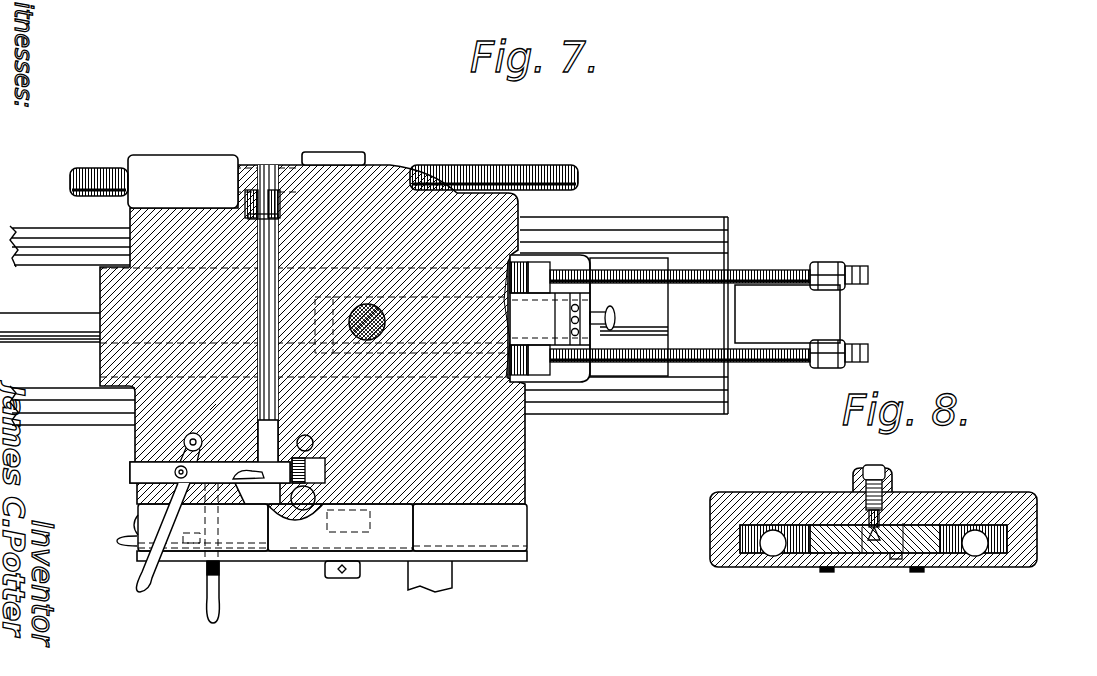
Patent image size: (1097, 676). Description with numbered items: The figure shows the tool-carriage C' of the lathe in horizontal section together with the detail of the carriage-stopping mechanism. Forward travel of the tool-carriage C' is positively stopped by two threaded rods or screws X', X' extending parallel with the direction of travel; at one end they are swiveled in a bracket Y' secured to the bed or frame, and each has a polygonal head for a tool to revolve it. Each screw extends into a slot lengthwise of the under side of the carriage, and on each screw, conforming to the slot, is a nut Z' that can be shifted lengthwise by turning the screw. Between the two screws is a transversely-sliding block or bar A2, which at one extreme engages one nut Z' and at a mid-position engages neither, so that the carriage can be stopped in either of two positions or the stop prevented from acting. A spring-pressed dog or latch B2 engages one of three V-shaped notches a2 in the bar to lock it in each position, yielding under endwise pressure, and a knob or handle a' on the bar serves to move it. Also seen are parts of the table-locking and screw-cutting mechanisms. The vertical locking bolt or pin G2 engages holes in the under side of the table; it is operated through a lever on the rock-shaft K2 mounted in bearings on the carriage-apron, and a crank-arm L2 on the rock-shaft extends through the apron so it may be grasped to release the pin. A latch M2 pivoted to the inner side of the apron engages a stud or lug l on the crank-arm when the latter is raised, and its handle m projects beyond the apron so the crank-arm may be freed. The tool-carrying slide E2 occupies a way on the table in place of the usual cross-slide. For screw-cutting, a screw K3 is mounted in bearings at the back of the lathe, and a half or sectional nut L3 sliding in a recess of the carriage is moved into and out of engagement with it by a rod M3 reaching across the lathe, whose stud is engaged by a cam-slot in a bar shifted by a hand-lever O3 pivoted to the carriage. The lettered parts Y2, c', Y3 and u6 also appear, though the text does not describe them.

In FIG. 7, the tool-carriage C' is at (312, 334).
In FIG. 7, the screw K3 is at (455, 165).
In FIG. 7, the half or sectional nut L3 is at (268, 170).
In FIG. 7, the shaft Y2 is at (33, 318).
In FIG. 7, the passage c' is at (325, 352).
In FIG. 7, the nut Z' is at (500, 322).
In FIG. 8, the nut Z' is at (875, 517).
In FIG. 7, the spring-pressed dog or latch B2 is at (600, 342).
In FIG. 8, the spring-pressed dog or latch B2 is at (884, 468).
In FIG. 7, the notches a2 is at (571, 331).
In FIG. 8, the notches a2 is at (862, 527).
In FIG. 7, the knob or handle a' is at (609, 307).
In FIG. 8, the knob or handle a' is at (903, 575).
In FIG. 7, the threaded rods or screws X' is at (709, 318).
In FIG. 8, the threaded rods or screws X' is at (873, 562).
In FIG. 7, the bracket Y' is at (787, 314).
In FIG. 7, the rock-shaft K2 is at (252, 452).
In FIG. 7, the roller Y3 is at (209, 438).
In FIG. 7, the rod M3 is at (225, 398).
In FIG. 7, the lever u6 is at (248, 457).
In FIG. 7, the locking bolt or pin G2 is at (311, 440).
In FIG. 7, the handle m is at (106, 533).
In FIG. 7, the tool-carrying slide E2 is at (397, 484).
In FIG. 7, the crank-arm L2 is at (222, 586).
In FIG. 7, the hand-lever O3 is at (163, 537).
In FIG. 7, the latch M2 is at (136, 518).
In FIG. 7, the stud or lug l is at (196, 534).
In FIG. 8, the transversely-sliding block or bar A2 is at (852, 556).